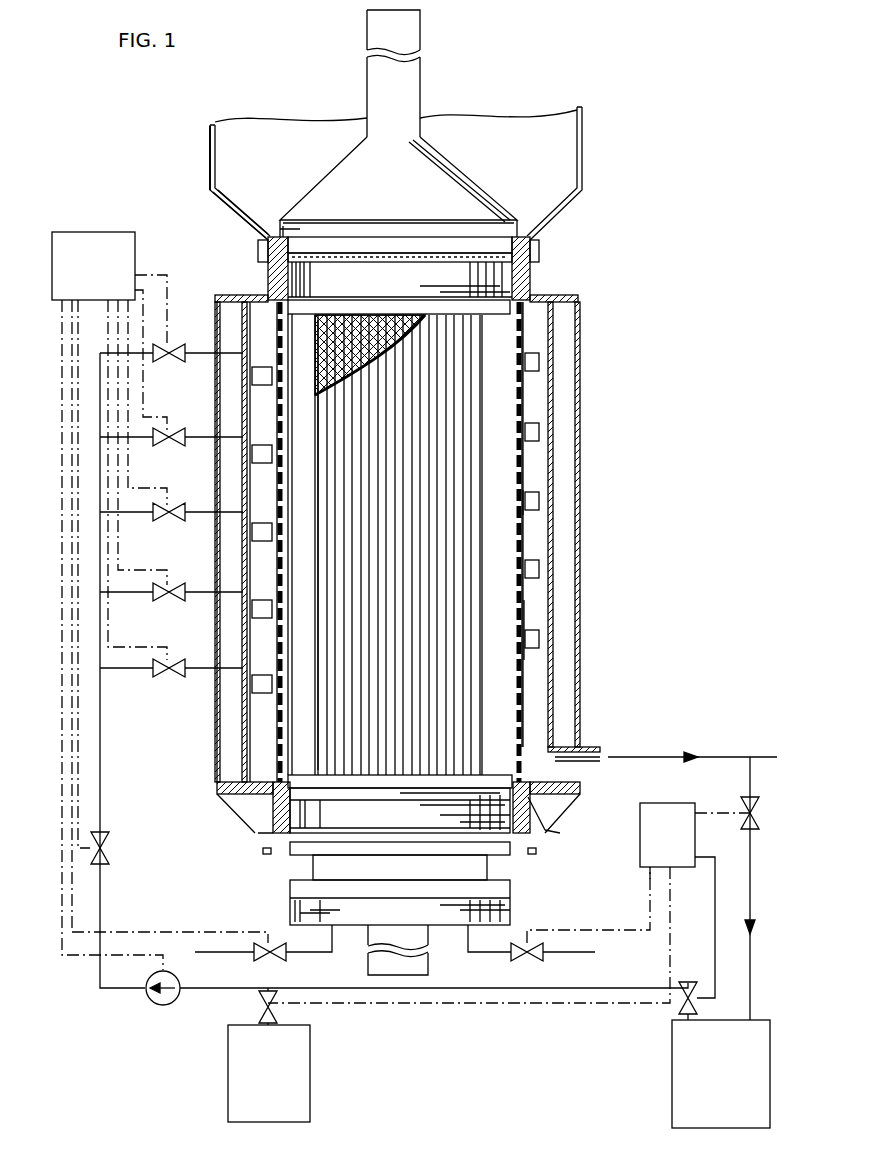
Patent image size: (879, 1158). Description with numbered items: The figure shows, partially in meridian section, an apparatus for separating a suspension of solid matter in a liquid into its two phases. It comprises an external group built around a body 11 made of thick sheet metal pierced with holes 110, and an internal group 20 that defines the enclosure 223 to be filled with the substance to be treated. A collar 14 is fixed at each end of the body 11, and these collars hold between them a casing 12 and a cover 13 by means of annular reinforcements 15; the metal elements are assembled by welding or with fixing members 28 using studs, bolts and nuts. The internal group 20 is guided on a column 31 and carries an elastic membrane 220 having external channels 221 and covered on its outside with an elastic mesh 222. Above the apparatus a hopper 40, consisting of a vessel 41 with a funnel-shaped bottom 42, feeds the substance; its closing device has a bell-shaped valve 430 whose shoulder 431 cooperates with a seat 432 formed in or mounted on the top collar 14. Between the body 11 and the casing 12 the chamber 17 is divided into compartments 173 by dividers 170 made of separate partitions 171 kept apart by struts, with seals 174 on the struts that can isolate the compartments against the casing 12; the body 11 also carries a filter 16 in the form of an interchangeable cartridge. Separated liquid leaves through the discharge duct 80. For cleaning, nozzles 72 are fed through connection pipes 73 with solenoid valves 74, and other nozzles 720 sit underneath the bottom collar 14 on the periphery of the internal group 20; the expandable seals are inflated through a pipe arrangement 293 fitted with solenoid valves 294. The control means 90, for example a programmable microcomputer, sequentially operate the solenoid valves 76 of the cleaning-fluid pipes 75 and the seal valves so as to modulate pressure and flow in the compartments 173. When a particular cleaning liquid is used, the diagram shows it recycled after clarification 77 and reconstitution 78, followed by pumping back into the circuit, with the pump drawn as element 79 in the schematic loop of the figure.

The column 31 is at (415, 35).
The hopper 40 is at (584, 128).
The vessel 41 is at (211, 132).
The valve 430 is at (440, 173).
The shoulder 431 is at (493, 230).
The seat 432 is at (283, 227).
The funnel-shaped bottom 42 is at (232, 210).
The nozzles 72 is at (490, 247).
The fixing members 28 is at (260, 284).
The collar 14 is at (530, 277).
The cover 13 is at (583, 322).
The reinforcements 15 is at (240, 318).
The casing 12 is at (553, 376).
The compartments 173 is at (538, 413).
The holes 110 is at (525, 425).
The chamber 17 is at (258, 488).
The body 11 is at (522, 472).
The dividers 170 is at (527, 508).
The filter 16 is at (522, 552).
The partitions 171 is at (524, 648).
The seals 174 is at (538, 674).
The duct 80 is at (596, 752).
The elastic mesh 222 is at (352, 380).
The external channels 221 is at (370, 478).
The elastic membrane 220 is at (318, 637).
The enclosure 223 is at (295, 715).
The solenoid valves 76 is at (168, 656).
The pipes 75 is at (100, 460).
The control means 90 is at (96, 248).
The internal group 20 is at (268, 868).
The nozzles 720 is at (533, 855).
The connection pipes 73 is at (248, 952).
The solenoid valves 74 is at (286, 956).
The pipe arrangement 293 is at (502, 953).
The solenoid valves 294 is at (542, 956).
The pump 79 is at (160, 1004).
The reconstitution 78 is at (300, 1090).
The clarification 77 is at (676, 1078).